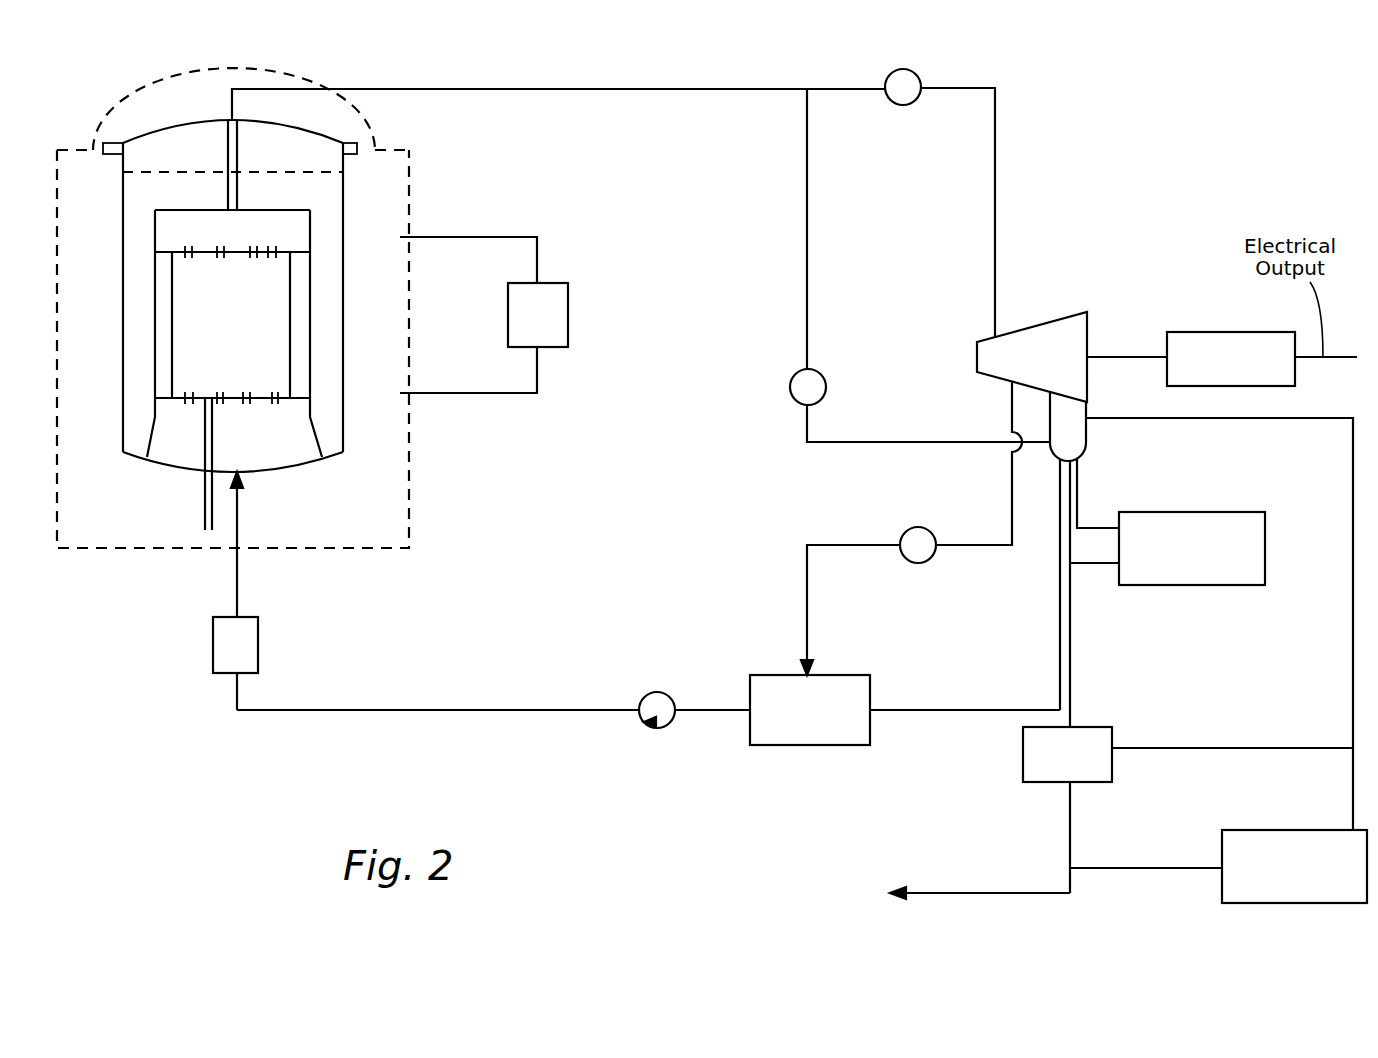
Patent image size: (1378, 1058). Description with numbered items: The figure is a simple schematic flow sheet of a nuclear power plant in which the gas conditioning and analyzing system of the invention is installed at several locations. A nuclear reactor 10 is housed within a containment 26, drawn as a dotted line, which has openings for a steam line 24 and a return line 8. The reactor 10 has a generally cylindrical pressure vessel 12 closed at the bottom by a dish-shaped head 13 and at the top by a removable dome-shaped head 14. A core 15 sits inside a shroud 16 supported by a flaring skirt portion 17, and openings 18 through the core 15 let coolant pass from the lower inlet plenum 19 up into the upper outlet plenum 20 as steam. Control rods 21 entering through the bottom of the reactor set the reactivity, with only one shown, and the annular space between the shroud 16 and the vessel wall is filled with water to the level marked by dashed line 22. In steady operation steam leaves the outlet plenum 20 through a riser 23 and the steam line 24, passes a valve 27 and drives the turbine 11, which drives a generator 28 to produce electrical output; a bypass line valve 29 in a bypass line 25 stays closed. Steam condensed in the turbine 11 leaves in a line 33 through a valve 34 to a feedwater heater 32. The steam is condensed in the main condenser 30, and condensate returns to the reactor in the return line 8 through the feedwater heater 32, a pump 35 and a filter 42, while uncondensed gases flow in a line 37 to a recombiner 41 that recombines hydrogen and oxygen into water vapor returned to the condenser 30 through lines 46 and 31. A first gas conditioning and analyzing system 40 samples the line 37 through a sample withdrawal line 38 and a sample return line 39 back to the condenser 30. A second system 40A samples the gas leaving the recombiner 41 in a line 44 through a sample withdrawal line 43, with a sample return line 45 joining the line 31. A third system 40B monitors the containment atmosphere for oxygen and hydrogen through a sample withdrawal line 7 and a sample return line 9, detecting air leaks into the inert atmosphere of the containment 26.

The sample withdrawal line 7 is at (510, 233).
The return line 8 is at (942, 708).
The sample return line 9 is at (488, 395).
The nuclear reactor 10 is at (462, 196).
The turbine 11 is at (1045, 323).
The pressure vessel 12 is at (343, 398).
The dish-shaped head 13 is at (295, 468).
The dome-shaped head 14 is at (300, 128).
The core 15 is at (290, 333).
The shroud 16 is at (310, 272).
The flaring skirt portion 17 is at (312, 433).
The openings 18 is at (236, 254).
The lower inlet plenum 19 is at (190, 443).
The upper outlet plenum 20 is at (247, 243).
The control rod 21 is at (205, 518).
The water level 22 is at (158, 172).
The riser 23 is at (237, 152).
The steam line 24 is at (382, 88).
The bypass line 25 is at (807, 228).
The containment 26 is at (409, 497).
The valve 27 is at (903, 105).
The generator 28 is at (1237, 332).
The bypass line valve 29 is at (790, 390).
The main condenser 30 is at (1050, 416).
The line 31 is at (1350, 465).
The feedwater heater 32 is at (824, 723).
The line 33 is at (1010, 492).
The valve 34 is at (906, 530).
The pump 35 is at (655, 692).
The line 37 is at (1072, 663).
The sample withdrawal line 38 is at (1092, 566).
The sample return line 39 is at (1079, 481).
The gas conditioning and analyzing system 40 is at (1235, 585).
The gas conditioning and analyzing system 40A is at (1290, 905).
The gas conditioning and analyzing system 40B is at (568, 312).
The recombiner 41 is at (1023, 763).
The filter 42 is at (258, 638).
The sample withdrawal line 43 is at (1145, 872).
The line 44 is at (1070, 884).
The sample return line 45 is at (1350, 800).
The line 46 is at (1230, 750).